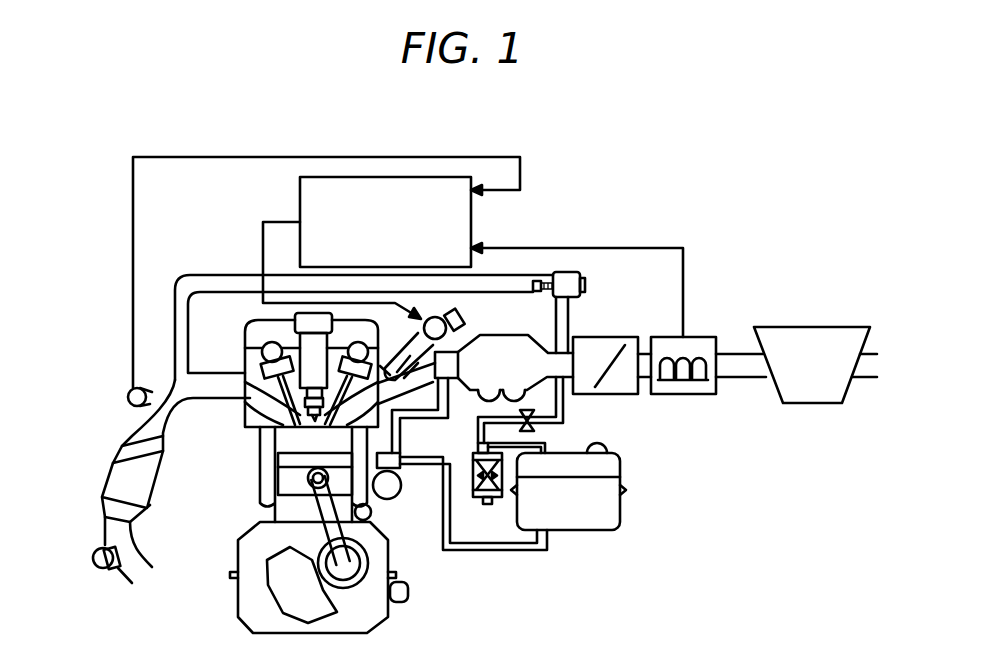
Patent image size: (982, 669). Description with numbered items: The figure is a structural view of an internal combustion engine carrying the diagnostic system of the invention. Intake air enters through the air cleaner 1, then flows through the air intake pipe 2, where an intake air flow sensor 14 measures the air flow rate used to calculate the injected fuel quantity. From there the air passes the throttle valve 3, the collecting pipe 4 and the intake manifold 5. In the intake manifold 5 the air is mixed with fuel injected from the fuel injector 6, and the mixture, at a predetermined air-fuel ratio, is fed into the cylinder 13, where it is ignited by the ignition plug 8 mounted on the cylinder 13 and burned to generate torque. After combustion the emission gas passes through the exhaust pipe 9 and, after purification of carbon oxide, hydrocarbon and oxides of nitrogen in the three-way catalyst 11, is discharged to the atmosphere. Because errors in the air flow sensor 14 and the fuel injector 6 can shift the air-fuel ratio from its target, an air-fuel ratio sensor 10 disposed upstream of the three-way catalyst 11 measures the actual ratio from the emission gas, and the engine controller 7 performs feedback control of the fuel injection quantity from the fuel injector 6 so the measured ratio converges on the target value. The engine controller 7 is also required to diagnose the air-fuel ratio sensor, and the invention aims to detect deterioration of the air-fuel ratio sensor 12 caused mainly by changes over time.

The air cleaner 1 is at (808, 331).
The air intake pipe 2 is at (735, 357).
The throttle valve 3 is at (611, 360).
The collecting pipe 4 is at (505, 343).
The intake manifold 5 is at (460, 363).
The fuel injector 6 is at (437, 342).
The engine controller 7 is at (300, 183).
The ignition plug 8 is at (312, 348).
The exhaust pipe 9 is at (168, 390).
The air-fuel ratio sensor 10 is at (128, 395).
The three-way catalyst 11 is at (122, 472).
The air-fuel ratio sensor 12 is at (104, 568).
The cylinder 13 is at (298, 442).
The intake air flow sensor 14 is at (698, 345).